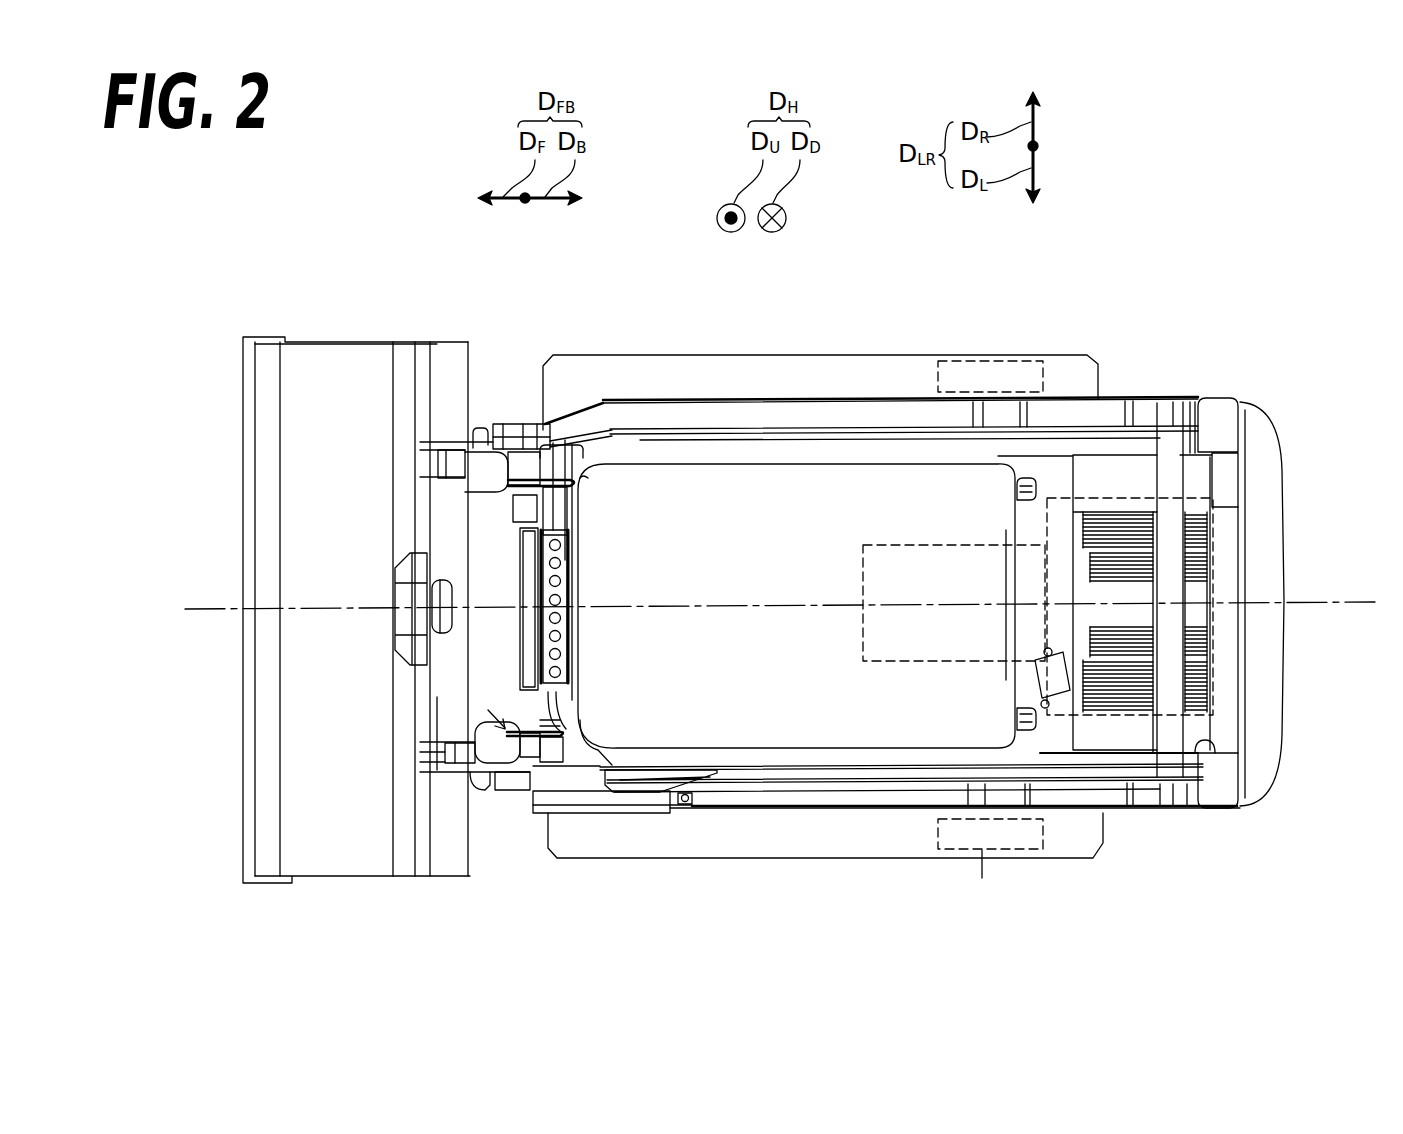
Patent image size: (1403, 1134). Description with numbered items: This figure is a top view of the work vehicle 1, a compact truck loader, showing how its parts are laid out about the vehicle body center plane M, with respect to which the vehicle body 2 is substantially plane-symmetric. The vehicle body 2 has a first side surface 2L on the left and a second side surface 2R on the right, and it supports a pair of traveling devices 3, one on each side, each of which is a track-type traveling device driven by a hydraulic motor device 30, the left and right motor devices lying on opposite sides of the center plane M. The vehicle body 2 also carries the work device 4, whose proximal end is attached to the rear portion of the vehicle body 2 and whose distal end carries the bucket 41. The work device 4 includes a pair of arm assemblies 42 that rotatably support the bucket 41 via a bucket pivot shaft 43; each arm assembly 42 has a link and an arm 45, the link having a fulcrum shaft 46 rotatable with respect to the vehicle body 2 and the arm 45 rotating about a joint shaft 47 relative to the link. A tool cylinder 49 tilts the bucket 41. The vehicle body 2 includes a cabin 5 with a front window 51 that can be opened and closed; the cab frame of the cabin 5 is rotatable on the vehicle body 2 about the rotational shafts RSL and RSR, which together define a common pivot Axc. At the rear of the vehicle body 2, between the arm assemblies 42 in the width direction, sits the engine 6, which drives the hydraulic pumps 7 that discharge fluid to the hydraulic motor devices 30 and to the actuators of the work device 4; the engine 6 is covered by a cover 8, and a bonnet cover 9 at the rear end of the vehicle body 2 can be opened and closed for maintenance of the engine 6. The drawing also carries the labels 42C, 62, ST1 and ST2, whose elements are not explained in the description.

The work vehicle 1 is at (320, 216).
The vehicle body 2 is at (1241, 400).
The second side surface 2R is at (587, 428).
The first side surface 2L is at (581, 815).
The traveling device 3 is at (823, 355).
The work device 4 is at (387, 262).
The cabin 5 is at (777, 511).
The engine 6 is at (1215, 700).
The hydraulic pump 7 is at (927, 662).
The cover 8 is at (1100, 475).
The bonnet cover 9 is at (1268, 518).
The hydraulic motor device 30 is at (1027, 358).
The bucket 41 is at (320, 335).
The arm assembly 42 is at (923, 402).
The center frame 42C is at (528, 524).
The bucket pivot shaft 43 is at (503, 790).
The arm 45 is at (785, 415).
The fulcrum shaft 46 is at (1150, 400).
The joint shaft 47 is at (1205, 478).
The tool cylinder 49 is at (457, 465).
The front window 51 is at (566, 658).
The sensor 62 is at (1053, 702).
The first cable ST1 is at (540, 576).
The second cable ST2 is at (540, 690).
The vehicle body center plane M is at (232, 606).
The rotational shaft RSR is at (1026, 470).
The rotational shaft RSL is at (1022, 733).
The pivot Axc is at (988, 880).